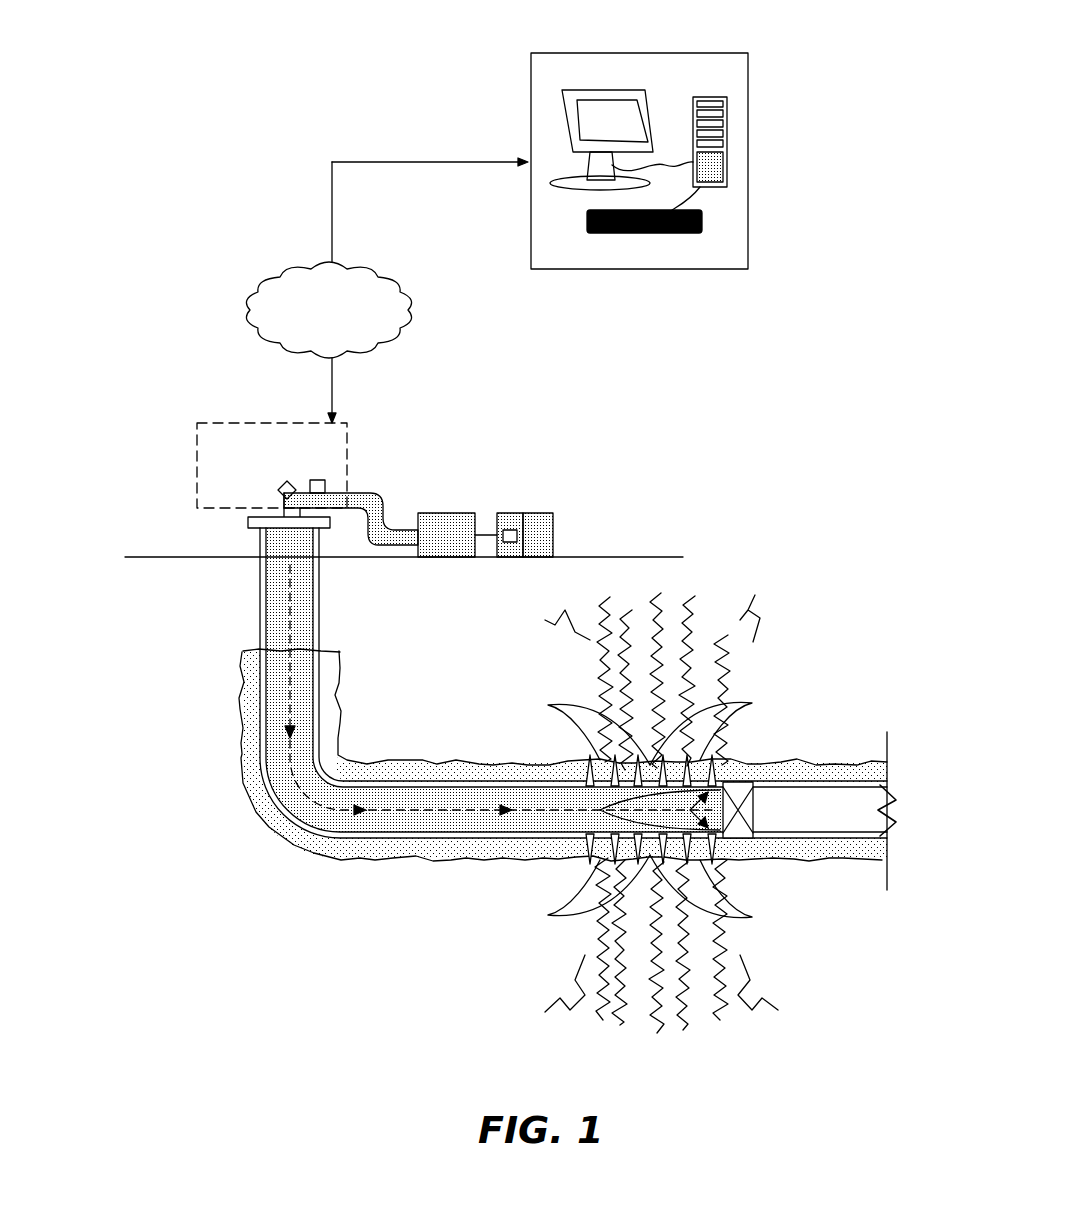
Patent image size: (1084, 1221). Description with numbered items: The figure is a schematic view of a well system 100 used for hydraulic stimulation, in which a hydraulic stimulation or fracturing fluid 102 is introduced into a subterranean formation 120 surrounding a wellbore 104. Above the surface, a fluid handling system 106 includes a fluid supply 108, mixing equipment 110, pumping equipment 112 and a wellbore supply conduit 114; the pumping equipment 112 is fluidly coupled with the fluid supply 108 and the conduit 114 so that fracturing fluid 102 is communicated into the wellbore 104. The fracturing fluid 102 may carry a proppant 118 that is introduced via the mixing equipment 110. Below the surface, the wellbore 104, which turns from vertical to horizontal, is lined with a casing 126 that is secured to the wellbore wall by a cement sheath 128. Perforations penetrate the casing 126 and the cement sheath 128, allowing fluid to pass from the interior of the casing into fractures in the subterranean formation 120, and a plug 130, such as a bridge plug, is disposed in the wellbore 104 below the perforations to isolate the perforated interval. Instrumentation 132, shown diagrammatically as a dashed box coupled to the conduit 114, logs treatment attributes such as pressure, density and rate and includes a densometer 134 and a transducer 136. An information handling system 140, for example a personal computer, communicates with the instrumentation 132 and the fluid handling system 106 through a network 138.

The well system 100 is at (188, 528).
The hydraulic stimulation fluid 102 is at (318, 806).
The wellbore 104 is at (340, 690).
The fluid handling system 106 is at (546, 481).
The fluid supply 108 is at (553, 513).
The mixing equipment 110 is at (516, 513).
The pumping equipment 112 is at (447, 513).
The wellbore supply conduit 114 is at (358, 492).
The proppant 118 is at (506, 530).
The subterranean formation 120 is at (380, 618).
The casing 126 is at (435, 782).
The cement sheath 128 is at (485, 762).
The plug 130 is at (755, 794).
The instrumentation 132 is at (280, 457).
The densometer 134 is at (282, 486).
The transducer 136 is at (315, 480).
The network 138 is at (305, 270).
The information handling system 140 is at (737, 30).